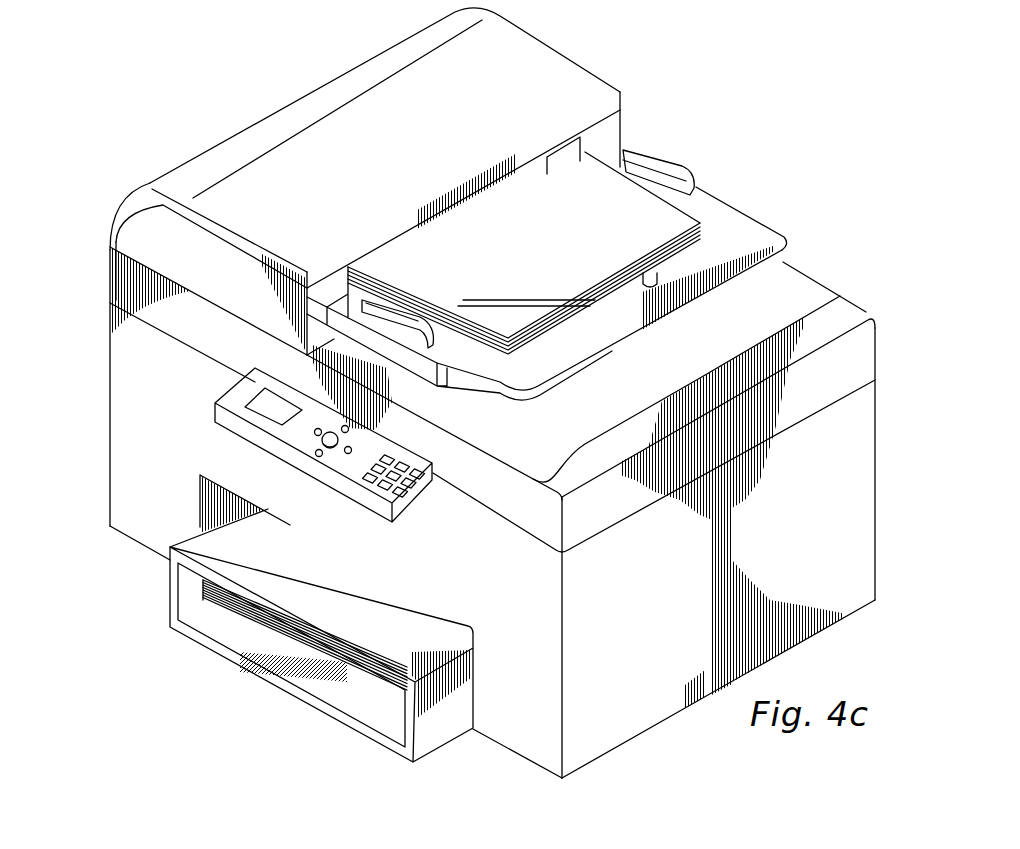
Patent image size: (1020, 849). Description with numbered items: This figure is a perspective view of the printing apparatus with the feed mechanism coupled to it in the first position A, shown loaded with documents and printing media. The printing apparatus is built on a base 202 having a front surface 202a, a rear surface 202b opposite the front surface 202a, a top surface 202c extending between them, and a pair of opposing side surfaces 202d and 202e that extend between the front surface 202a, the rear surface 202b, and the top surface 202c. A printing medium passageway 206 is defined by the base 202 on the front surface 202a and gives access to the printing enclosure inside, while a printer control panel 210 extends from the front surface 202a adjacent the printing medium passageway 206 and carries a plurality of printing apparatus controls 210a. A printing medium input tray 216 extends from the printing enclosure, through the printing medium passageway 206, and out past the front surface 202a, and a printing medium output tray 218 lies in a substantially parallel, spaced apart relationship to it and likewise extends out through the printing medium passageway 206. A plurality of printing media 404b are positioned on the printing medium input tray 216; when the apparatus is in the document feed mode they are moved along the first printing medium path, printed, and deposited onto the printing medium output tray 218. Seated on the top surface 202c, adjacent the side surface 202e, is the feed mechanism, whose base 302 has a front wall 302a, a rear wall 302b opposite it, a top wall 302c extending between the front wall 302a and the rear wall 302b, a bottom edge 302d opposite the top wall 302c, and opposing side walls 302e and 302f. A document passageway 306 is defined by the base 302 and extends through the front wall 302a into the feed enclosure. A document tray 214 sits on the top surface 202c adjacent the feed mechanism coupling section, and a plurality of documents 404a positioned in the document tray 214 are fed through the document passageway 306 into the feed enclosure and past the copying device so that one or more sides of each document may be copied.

The first position A is at (239, 76).
The base 302 is at (343, 68).
The front wall 302a is at (318, 282).
The rear wall 302b is at (133, 190).
The top wall 302c is at (418, 160).
The bottom edge 302d is at (233, 322).
The side wall 302e is at (128, 232).
The side wall 302f is at (623, 138).
The document passageway 306 is at (554, 158).
The documents 404a is at (514, 261).
The document tray 214 is at (732, 213).
The base 202 is at (824, 264).
The front surface 202a is at (532, 756).
The rear surface 202b is at (877, 462).
The top surface 202c is at (700, 345).
The side surface 202d is at (608, 746).
The side surface 202e is at (110, 505).
The printer control panel 210 is at (214, 396).
The printing apparatus controls 210a is at (272, 413).
The printing medium passageway 206 is at (195, 488).
The printing medium output tray 218 is at (375, 621).
The printing media 404b is at (215, 625).
The printing medium input tray 216 is at (380, 720).